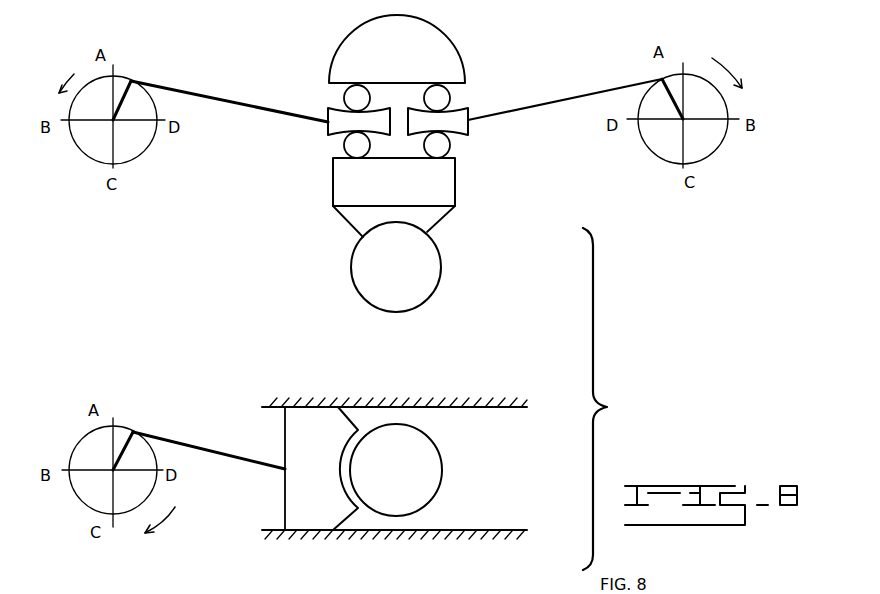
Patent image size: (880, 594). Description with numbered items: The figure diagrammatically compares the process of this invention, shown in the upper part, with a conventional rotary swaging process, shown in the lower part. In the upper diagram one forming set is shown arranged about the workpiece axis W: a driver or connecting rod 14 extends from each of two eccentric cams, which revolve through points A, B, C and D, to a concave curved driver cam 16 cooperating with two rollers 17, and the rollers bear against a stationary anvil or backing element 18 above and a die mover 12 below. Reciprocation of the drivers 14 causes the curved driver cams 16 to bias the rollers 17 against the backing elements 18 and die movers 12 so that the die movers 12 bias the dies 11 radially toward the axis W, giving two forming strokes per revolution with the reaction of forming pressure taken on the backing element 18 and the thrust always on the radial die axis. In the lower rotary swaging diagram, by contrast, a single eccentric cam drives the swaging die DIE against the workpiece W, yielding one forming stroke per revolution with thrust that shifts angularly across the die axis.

The die 11 is at (430, 220).
The die mover 12 is at (456, 188).
The driver or connecting rod 14 is at (246, 102).
The curved driver cam 16 is at (338, 125).
The roller 17 is at (347, 100).
The stationary anvil or backing element 18 is at (438, 45).
The workpiece axis W is at (397, 267).
The die DIE is at (322, 445).